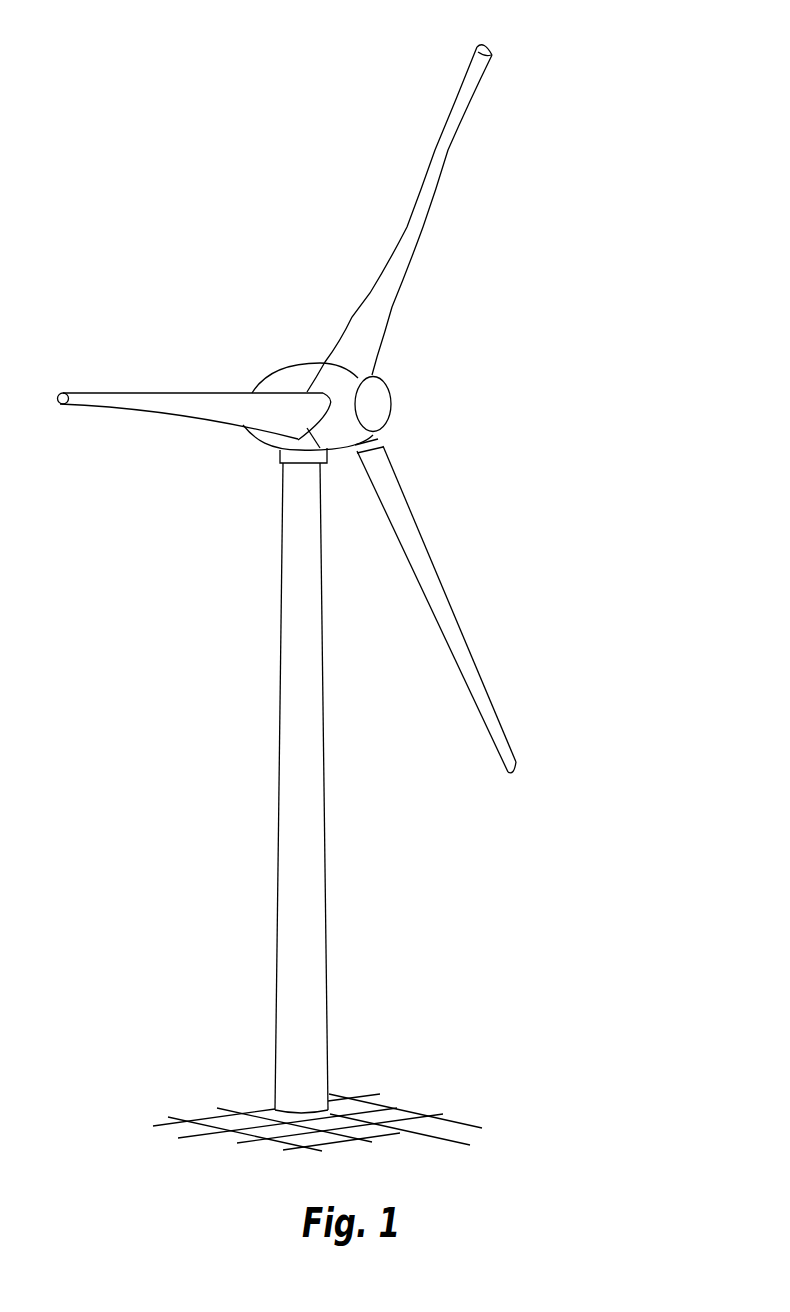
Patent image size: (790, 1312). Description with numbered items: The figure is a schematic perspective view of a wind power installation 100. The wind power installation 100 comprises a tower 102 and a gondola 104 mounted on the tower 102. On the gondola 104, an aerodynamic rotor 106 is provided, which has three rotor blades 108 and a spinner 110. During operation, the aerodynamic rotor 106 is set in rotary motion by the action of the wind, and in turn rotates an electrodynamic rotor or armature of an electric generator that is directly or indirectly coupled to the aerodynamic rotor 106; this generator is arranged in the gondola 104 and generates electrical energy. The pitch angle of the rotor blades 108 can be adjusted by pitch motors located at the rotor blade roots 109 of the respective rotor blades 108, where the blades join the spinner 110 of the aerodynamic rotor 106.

The wind power installation 100 is at (240, 528).
The tower 102 is at (308, 885).
The gondola 104 is at (296, 381).
The aerodynamic rotor 106 is at (463, 330).
The rotor blades 108 is at (442, 168).
The rotor blade roots 109 is at (381, 443).
The spinner 110 is at (380, 405).